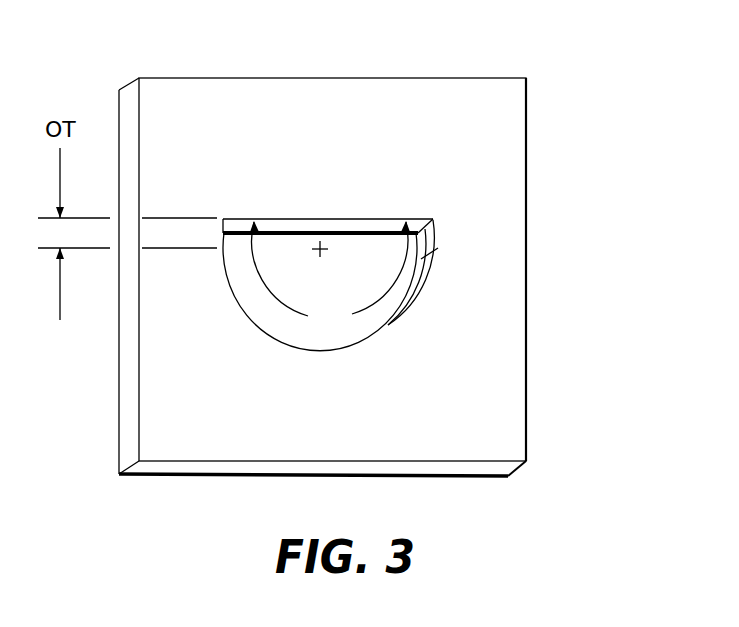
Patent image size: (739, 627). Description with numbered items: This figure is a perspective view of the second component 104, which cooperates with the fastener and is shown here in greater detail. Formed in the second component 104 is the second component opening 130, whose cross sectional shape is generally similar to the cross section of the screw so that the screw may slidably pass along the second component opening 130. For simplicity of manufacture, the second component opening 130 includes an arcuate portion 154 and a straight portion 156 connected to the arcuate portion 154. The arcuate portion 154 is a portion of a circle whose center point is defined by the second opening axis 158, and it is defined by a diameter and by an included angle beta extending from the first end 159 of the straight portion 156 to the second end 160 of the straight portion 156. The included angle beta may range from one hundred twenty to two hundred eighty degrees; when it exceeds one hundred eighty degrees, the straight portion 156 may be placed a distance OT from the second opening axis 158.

The second component 104 is at (525, 129).
The second component opening 130 is at (410, 221).
The arcuate portion 154 is at (268, 337).
The straight portion 156 is at (283, 219).
The second opening axis 158 is at (324, 252).
The first end of the straight portion 159 is at (224, 219).
The second end of the straight portion 160 is at (435, 219).